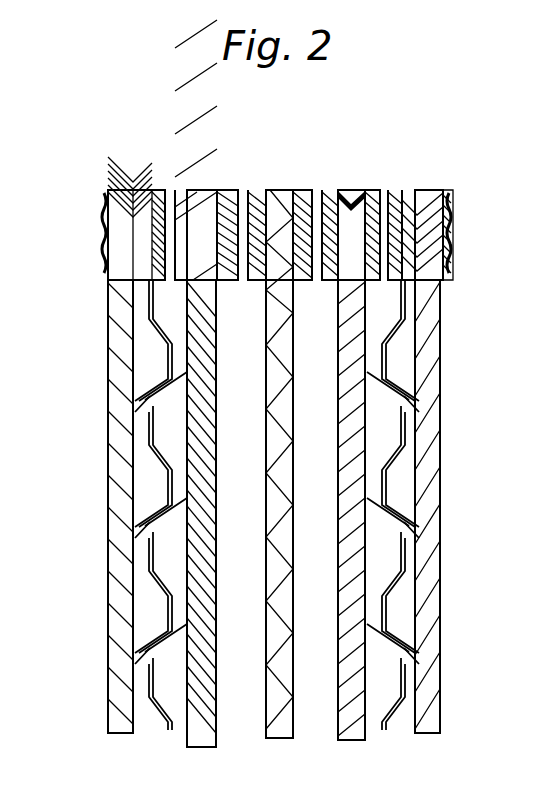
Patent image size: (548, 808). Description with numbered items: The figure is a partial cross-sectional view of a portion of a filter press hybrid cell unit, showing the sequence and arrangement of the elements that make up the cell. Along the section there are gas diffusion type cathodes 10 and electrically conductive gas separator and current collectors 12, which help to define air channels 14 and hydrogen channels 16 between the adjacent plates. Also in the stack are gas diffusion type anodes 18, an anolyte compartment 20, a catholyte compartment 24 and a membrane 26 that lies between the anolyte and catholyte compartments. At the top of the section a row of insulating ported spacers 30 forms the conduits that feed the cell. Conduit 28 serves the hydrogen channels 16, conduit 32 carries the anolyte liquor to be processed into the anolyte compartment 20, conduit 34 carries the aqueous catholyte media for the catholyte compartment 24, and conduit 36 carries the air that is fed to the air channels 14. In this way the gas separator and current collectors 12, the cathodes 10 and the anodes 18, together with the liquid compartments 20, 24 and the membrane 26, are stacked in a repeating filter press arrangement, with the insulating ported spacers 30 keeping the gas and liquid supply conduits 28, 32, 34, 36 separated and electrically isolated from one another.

The gas diffusion type cathode 10 is at (117, 734).
The electrically conductive gas separator and current collector 12 is at (150, 558).
The air channel 14 is at (155, 365).
The hydrogen channel 16 is at (172, 308).
The gas diffusion type anode 18 is at (200, 748).
The anolyte compartment 20 is at (237, 732).
The catholyte compartment 24 is at (325, 732).
The membrane 26 is at (277, 740).
The conduit 28 is at (170, 198).
The insulating ported spacer 30 is at (104, 212).
The conduit 32 is at (242, 198).
The conduit 34 is at (322, 192).
The conduit 36 is at (388, 192).